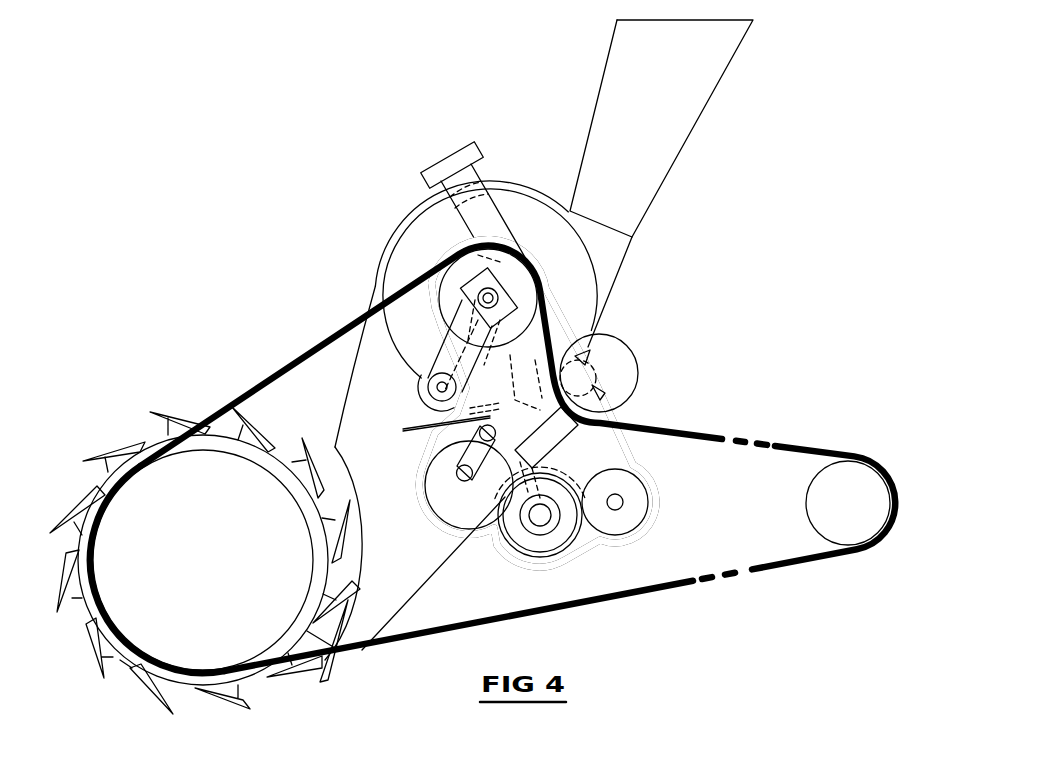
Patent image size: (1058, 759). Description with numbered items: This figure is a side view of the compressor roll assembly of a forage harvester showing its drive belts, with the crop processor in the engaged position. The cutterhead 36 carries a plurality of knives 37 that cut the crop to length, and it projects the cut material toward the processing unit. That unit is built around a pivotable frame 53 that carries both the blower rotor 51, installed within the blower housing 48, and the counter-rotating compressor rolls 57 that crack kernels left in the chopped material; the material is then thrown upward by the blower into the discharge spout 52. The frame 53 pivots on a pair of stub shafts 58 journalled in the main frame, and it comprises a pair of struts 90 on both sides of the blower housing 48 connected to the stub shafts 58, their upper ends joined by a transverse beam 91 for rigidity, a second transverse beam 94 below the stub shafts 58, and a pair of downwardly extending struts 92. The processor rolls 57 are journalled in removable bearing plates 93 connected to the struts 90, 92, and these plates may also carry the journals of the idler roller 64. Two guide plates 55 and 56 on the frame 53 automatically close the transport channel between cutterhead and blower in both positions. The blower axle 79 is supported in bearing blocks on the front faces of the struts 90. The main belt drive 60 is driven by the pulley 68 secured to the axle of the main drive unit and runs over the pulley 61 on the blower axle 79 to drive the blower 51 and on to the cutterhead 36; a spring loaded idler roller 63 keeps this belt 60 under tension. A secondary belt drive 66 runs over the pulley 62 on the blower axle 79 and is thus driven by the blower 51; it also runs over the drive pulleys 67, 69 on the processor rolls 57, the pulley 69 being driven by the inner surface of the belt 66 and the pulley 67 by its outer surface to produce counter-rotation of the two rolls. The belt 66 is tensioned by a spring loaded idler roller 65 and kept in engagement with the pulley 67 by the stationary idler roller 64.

The cutterhead 36 is at (128, 460).
The knives 37 is at (242, 703).
The blower housing 48 is at (378, 274).
The blower rotor 51 is at (422, 238).
The discharge spout 52 is at (695, 95).
The frame 53 is at (424, 176).
The guide plate 55 is at (404, 424).
The guide plate 56 is at (566, 548).
The compressor rolls 57 is at (527, 537).
The stub shafts 58 is at (590, 372).
The main belt drive 60 is at (712, 430).
The pulley 61 is at (492, 294).
The pulley 62 is at (546, 272).
The idler roller 63 is at (636, 364).
The idler roller 64 is at (638, 505).
The idler roller 65 is at (426, 385).
The secondary belt drive 66 is at (425, 447).
The drive pulley 67 is at (548, 558).
The pulley 68 is at (858, 492).
The drive pulley 69 is at (432, 498).
The blower axle 79 is at (552, 232).
The struts 90 is at (488, 170).
The transverse beam 91 is at (460, 158).
The downwardly extending struts 92 is at (625, 445).
The bearing plates 93 is at (430, 434).
The second transverse beam 94 is at (602, 390).